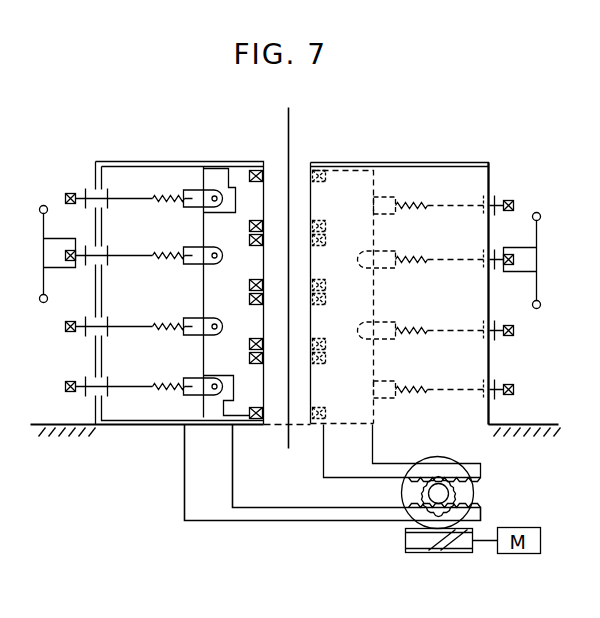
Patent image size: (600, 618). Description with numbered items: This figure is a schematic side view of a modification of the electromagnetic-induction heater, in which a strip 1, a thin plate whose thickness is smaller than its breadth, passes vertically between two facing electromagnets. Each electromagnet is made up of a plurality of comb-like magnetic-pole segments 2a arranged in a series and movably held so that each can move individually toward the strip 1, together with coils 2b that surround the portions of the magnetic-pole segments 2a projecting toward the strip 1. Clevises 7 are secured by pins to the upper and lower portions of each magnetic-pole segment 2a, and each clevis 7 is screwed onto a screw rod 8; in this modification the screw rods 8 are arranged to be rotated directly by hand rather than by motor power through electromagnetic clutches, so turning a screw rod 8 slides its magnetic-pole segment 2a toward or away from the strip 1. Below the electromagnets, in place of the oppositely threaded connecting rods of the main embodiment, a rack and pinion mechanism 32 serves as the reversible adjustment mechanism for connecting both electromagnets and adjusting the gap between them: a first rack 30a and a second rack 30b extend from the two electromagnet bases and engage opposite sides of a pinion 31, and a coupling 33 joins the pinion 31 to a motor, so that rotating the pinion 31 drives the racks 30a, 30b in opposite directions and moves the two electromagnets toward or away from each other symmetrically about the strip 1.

The strip 1 is at (290, 131).
The magnetic-pole segment 2a is at (217, 170).
The coil 2b is at (268, 172).
The clevis 7 is at (197, 263).
The screw rod 8 is at (132, 256).
The lower rack 30a is at (277, 522).
The upper rack 30b is at (480, 470).
The pinion 31 is at (447, 492).
The rack and pinion mechanism 32 is at (433, 457).
The coupling 33 is at (416, 545).